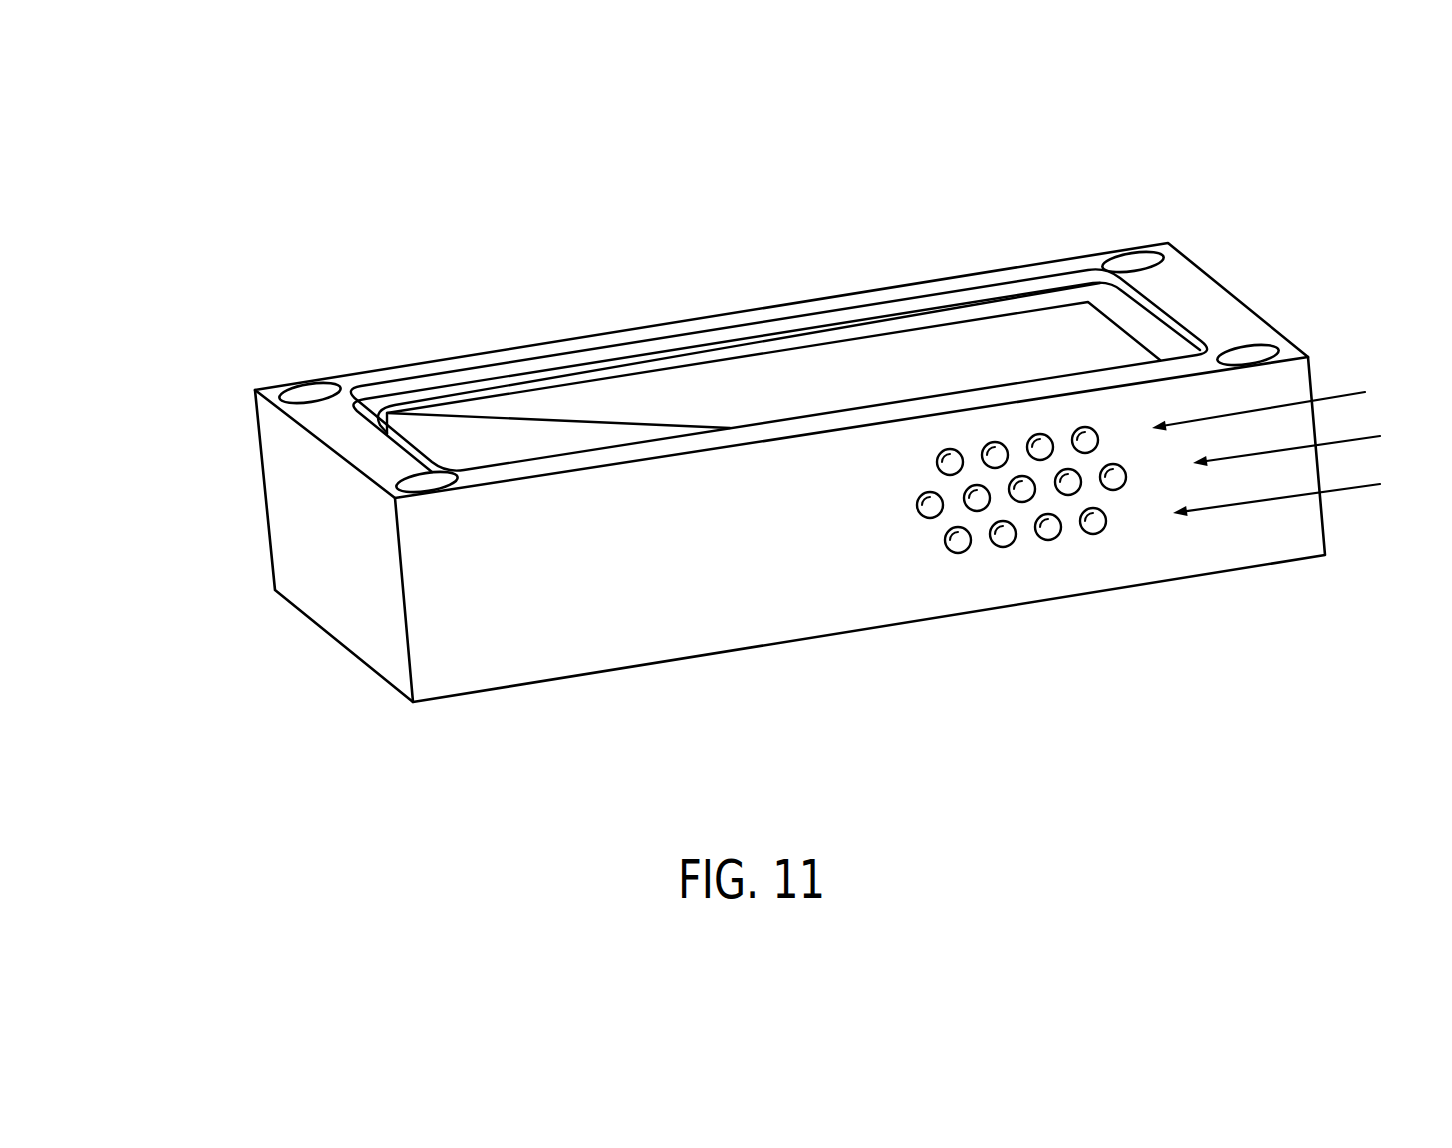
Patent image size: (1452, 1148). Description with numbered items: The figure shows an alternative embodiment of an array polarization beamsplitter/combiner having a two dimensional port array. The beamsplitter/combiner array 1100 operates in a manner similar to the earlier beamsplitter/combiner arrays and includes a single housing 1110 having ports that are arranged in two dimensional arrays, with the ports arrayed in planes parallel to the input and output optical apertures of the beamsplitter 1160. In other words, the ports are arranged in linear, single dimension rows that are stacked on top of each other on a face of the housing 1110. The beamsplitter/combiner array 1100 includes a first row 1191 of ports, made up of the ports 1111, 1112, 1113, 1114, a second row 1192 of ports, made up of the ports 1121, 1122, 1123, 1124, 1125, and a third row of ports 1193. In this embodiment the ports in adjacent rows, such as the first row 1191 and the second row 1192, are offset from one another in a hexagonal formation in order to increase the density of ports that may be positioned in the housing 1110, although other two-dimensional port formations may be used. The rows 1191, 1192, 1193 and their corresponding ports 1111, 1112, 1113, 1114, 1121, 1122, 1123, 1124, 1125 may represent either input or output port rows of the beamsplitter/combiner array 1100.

The beamsplitter/combiner array 1100 is at (281, 286).
The housing 1110 is at (310, 533).
The beamsplitter 1160 is at (945, 362).
The port 1111 is at (938, 468).
The port 1112 is at (982, 447).
The port 1113 is at (1027, 437).
The port 1114 is at (1097, 432).
The port 1121 is at (920, 517).
The port 1122 is at (977, 508).
The port 1123 is at (1022, 501).
The port 1124 is at (1068, 495).
The port 1125 is at (1113, 490).
The first row 1191 is at (1287, 403).
The second row 1192 is at (1315, 444).
The third row of ports 1193 is at (1305, 493).